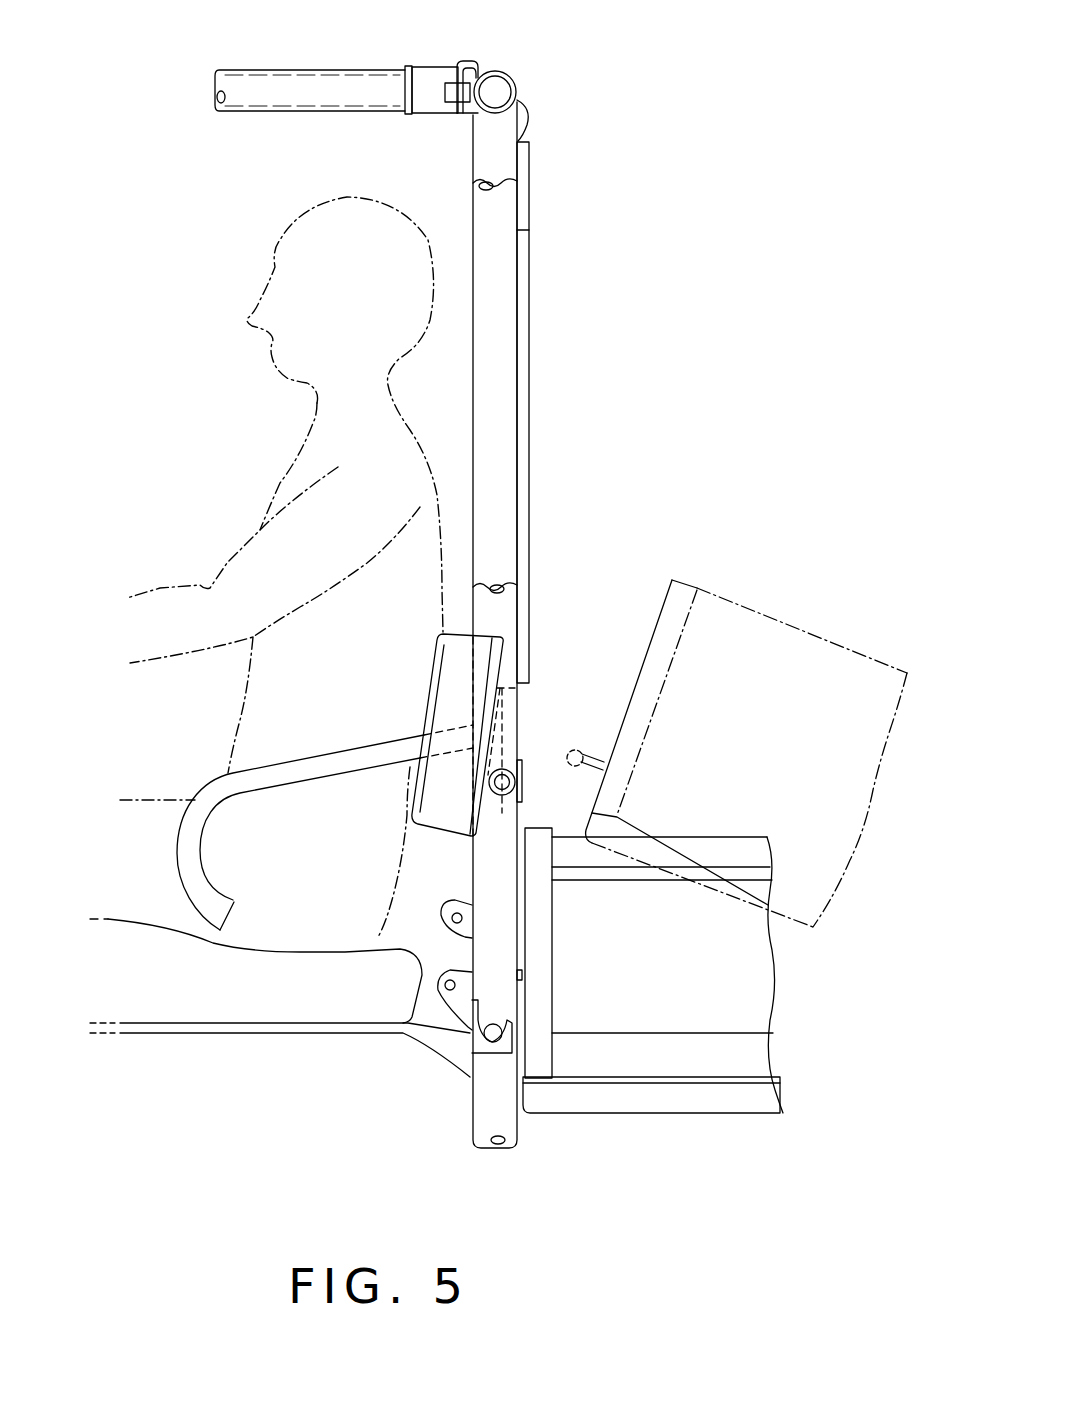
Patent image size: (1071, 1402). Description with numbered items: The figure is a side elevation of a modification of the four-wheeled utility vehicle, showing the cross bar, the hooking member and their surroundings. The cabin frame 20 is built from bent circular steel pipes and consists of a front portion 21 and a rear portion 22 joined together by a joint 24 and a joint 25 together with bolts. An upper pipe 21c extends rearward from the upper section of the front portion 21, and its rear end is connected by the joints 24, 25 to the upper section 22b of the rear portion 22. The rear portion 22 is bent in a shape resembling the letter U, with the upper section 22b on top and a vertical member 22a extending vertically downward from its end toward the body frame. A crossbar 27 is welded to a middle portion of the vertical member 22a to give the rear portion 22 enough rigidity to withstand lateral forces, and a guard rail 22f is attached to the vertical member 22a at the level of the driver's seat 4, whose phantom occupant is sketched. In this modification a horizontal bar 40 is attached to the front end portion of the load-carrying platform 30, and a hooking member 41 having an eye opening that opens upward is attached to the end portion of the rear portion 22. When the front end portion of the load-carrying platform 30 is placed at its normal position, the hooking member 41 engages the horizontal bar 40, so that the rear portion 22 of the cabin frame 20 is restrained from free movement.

The driver's seat 4 is at (222, 1003).
The cabin frame 20 is at (589, 624).
The front portion 21 is at (290, 123).
The upper pipe 21c is at (245, 98).
The rear portion 22 is at (548, 286).
The vertical member 22a is at (502, 337).
The upper section 22b is at (515, 74).
The guard rail 22f is at (320, 763).
The joint 24 is at (437, 108).
The joint 25 is at (468, 64).
The crossbar 27 is at (500, 767).
The load-carrying platform 30 is at (803, 630).
The horizontal bar 40 is at (577, 750).
The hooking member 41 is at (492, 1057).